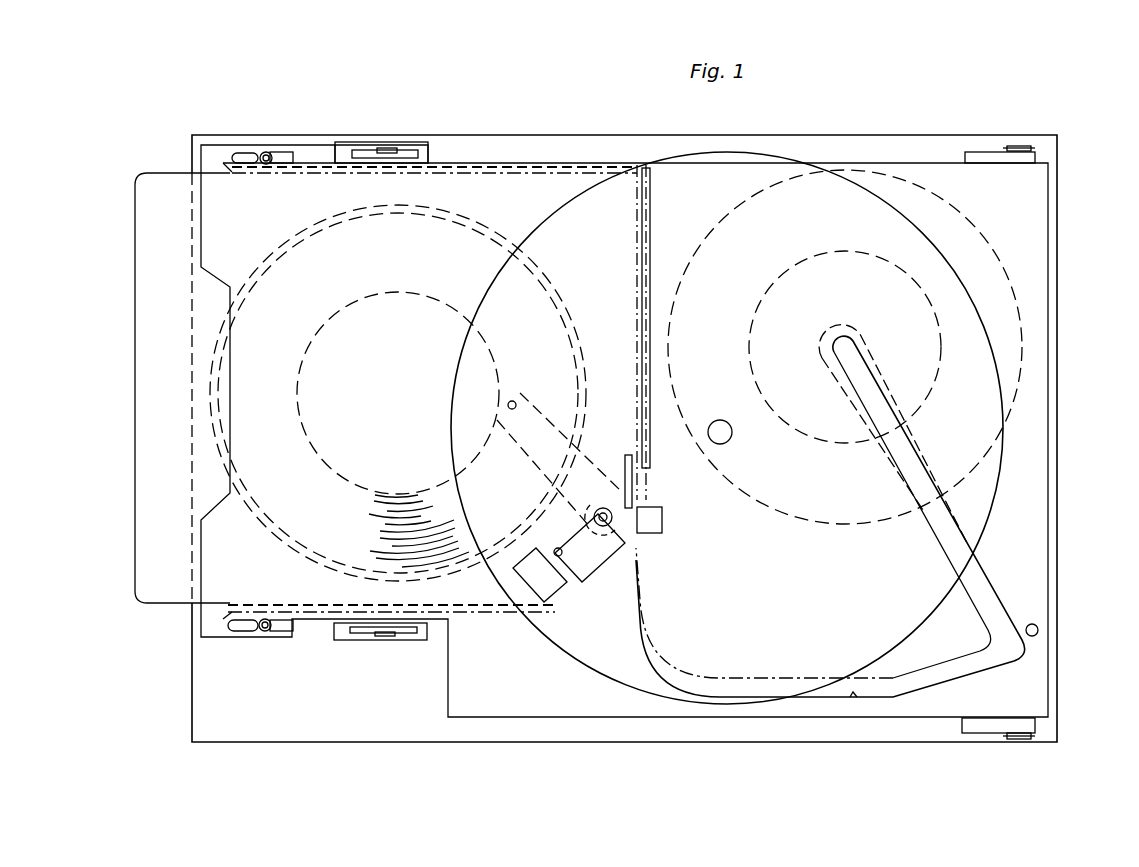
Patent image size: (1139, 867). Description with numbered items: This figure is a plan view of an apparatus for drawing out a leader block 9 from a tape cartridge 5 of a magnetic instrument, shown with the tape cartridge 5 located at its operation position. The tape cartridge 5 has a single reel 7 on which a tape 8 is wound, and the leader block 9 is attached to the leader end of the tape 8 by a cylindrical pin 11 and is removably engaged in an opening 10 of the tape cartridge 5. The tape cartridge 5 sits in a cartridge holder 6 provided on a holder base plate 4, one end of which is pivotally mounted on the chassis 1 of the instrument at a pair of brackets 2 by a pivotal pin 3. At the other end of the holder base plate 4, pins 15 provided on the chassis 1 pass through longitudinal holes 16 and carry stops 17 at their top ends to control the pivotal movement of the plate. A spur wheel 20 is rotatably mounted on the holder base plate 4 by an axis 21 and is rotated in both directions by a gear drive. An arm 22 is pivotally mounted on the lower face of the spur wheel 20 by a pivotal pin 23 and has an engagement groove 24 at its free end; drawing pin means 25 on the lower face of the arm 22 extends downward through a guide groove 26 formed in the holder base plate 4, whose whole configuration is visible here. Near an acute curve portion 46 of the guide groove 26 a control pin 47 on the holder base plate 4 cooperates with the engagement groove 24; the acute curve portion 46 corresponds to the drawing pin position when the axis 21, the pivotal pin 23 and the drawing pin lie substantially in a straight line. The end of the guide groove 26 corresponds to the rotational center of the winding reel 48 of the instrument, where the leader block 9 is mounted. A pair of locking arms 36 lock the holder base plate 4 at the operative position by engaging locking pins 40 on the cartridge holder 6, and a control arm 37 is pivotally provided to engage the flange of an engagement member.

The chassis 1 is at (358, 742).
The bracket 2 is at (977, 152).
The pivotal pin 3 is at (1022, 146).
The holder base plate 4 is at (500, 718).
The tape cartridge 5 is at (176, 603).
The cartridge holder 6 is at (320, 614).
The single reel 7 is at (522, 190).
The tape 8 is at (287, 517).
The leader block 9 is at (545, 585).
The opening 10 is at (612, 565).
The cylindrical pin 11 is at (562, 556).
The pin 15 is at (268, 153).
The longitudinal hole 16 is at (246, 153).
The stop 17 is at (292, 158).
The spur wheel 20 is at (614, 668).
The axis 21 is at (735, 440).
The arm 22 is at (588, 452).
The pivotal pin 23 is at (515, 400).
The engagement groove 24 is at (606, 486).
The drawing pin means 25 is at (598, 508).
The guide groove 26 is at (853, 700).
The locking arm 36 is at (372, 150).
The control arm 37 is at (662, 522).
The locking pin 40 is at (395, 150).
The acute curve portion 46 is at (1022, 652).
The control pin 47 is at (1040, 630).
The winding reel 48 is at (985, 258).